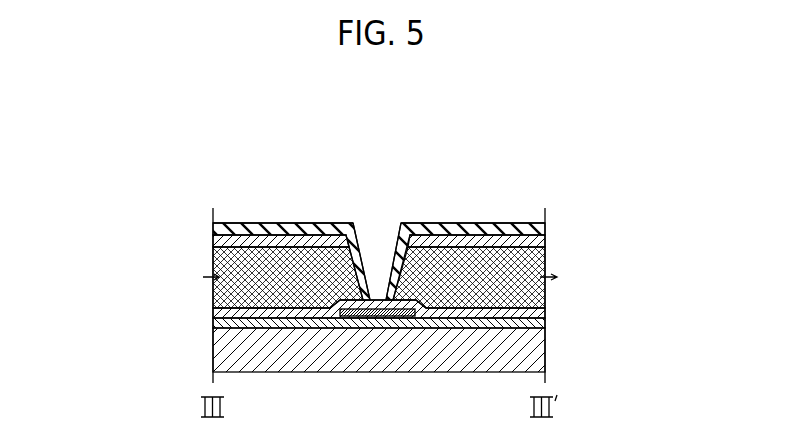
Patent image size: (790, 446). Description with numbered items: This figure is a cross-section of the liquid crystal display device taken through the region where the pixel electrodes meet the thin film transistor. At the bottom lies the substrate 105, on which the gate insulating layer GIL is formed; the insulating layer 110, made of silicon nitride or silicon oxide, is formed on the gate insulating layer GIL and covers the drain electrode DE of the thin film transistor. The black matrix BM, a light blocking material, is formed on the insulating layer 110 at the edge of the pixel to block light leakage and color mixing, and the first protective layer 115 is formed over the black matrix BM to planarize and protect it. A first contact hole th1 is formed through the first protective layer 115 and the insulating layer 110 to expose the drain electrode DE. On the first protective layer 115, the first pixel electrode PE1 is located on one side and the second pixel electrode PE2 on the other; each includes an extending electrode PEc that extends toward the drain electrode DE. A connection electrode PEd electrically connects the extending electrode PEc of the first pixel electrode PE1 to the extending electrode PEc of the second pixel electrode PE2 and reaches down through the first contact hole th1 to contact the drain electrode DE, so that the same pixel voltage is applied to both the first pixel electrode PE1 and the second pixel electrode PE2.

The first pixel electrode PE1 is at (215, 231).
The second pixel electrode PE2 is at (546, 230).
The extending electrode PEc is at (283, 228).
The connection electrode PEd is at (372, 296).
The first contact hole th1 is at (381, 296).
The first protective layer 115 is at (535, 241).
The insulating layer 110 is at (542, 313).
The gate insulating layer GIL is at (537, 323).
The substrate 105 is at (537, 350).
The black matrix BM is at (379, 277).
The drain electrode DE is at (372, 318).